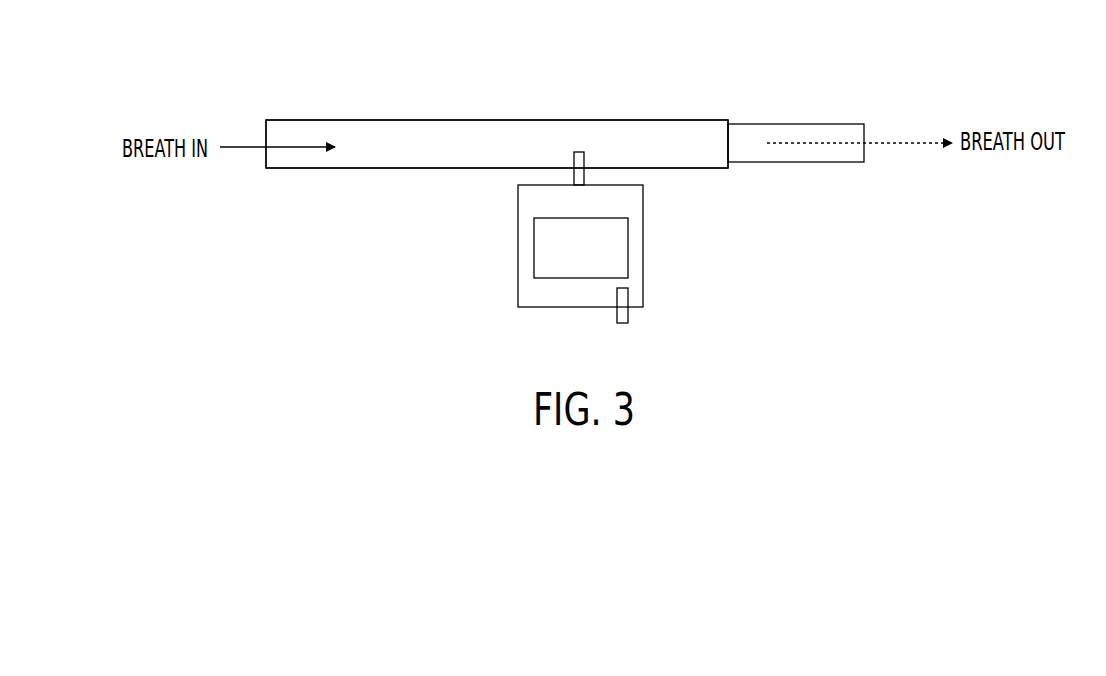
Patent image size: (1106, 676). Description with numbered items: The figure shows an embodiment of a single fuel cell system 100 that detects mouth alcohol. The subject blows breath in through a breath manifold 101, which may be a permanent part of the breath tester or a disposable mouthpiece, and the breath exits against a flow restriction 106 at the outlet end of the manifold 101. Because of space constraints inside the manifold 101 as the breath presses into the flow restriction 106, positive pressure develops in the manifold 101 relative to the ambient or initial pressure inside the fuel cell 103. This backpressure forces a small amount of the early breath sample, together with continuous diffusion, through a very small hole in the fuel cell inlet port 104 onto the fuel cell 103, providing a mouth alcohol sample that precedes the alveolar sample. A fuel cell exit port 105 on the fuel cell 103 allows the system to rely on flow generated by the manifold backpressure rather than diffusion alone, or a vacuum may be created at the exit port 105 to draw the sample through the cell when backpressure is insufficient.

The single fuel cell system 100 is at (630, 118).
The breath manifold 101 is at (393, 173).
The fuel cell 103 is at (535, 245).
The fuel cell inlet port 104 is at (566, 147).
The fuel cell exit port 105 is at (634, 316).
The flow restriction 106 is at (728, 114).